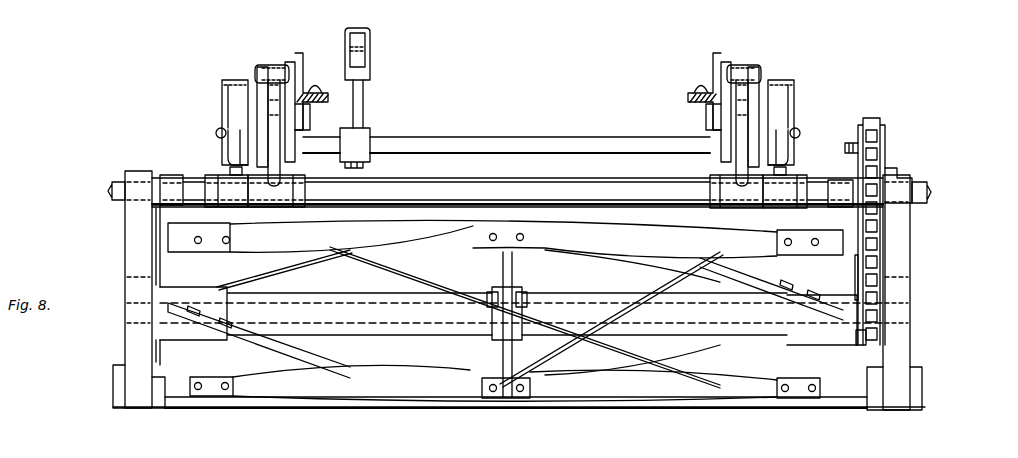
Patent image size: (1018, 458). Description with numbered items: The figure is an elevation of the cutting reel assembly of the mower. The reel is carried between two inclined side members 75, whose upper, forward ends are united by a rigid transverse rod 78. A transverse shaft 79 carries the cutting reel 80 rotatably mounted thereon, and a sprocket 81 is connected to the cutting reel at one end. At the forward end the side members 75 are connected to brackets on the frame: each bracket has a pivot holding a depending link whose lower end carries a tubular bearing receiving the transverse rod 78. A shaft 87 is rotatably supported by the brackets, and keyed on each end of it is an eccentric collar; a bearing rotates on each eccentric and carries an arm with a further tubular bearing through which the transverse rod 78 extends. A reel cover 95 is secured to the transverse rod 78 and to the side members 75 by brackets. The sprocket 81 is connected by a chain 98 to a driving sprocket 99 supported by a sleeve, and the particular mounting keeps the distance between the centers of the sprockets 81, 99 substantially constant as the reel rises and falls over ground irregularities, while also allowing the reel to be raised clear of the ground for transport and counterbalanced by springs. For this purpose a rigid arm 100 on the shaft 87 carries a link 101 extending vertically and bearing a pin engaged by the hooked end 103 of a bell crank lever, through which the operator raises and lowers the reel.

The side members 75 is at (132, 236).
The transverse rod 78 is at (527, 178).
The transverse shaft 79 is at (428, 310).
The cutting reel 80 is at (618, 245).
The sprocket 81 is at (860, 335).
The shaft 87 is at (497, 128).
The reel cover 95 is at (158, 222).
The chain 98 is at (870, 275).
The sprocket 99 is at (885, 142).
The rigid arm 100 is at (362, 168).
The link 101 is at (365, 70).
The hooked end 103 is at (356, 28).